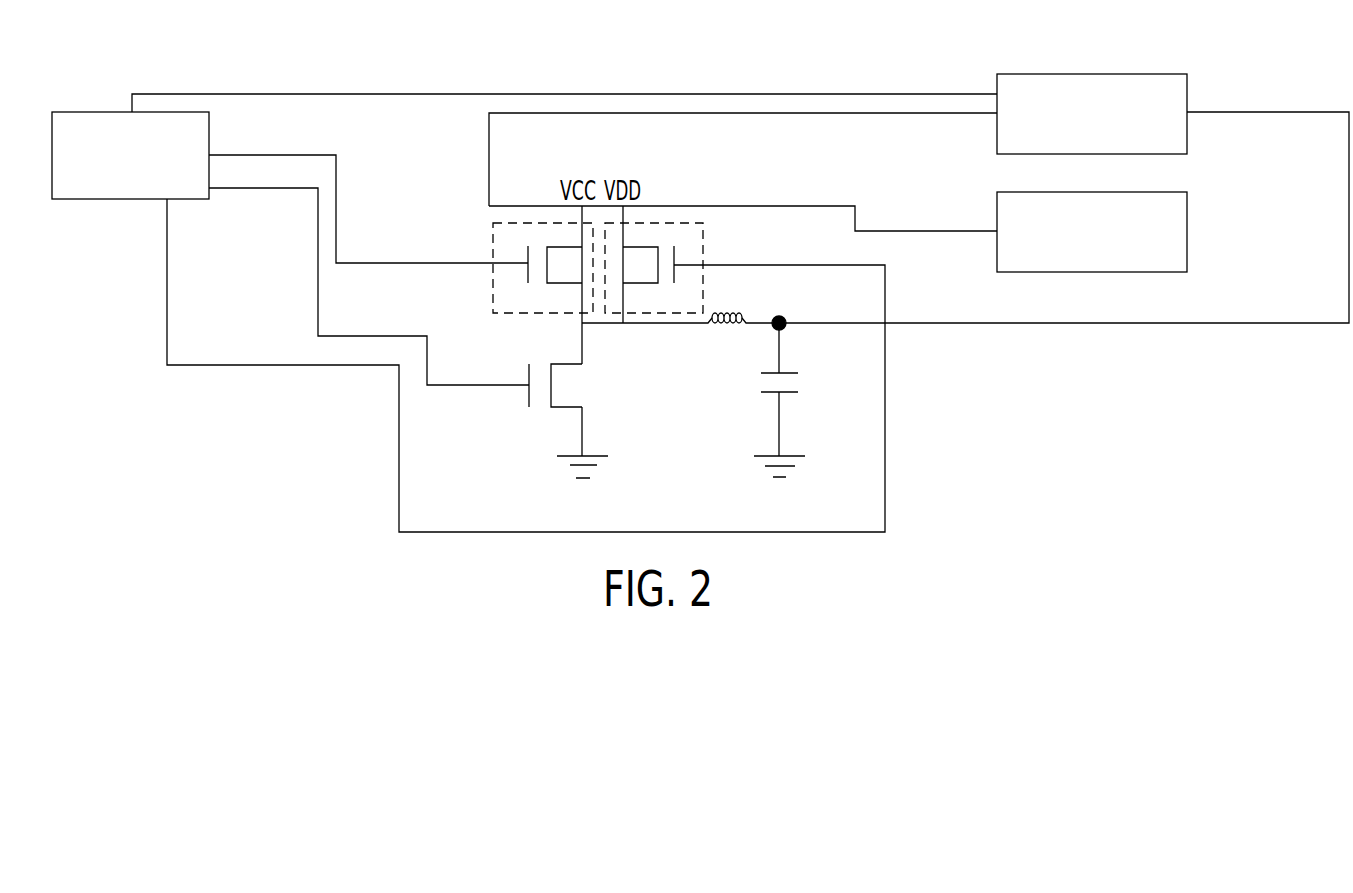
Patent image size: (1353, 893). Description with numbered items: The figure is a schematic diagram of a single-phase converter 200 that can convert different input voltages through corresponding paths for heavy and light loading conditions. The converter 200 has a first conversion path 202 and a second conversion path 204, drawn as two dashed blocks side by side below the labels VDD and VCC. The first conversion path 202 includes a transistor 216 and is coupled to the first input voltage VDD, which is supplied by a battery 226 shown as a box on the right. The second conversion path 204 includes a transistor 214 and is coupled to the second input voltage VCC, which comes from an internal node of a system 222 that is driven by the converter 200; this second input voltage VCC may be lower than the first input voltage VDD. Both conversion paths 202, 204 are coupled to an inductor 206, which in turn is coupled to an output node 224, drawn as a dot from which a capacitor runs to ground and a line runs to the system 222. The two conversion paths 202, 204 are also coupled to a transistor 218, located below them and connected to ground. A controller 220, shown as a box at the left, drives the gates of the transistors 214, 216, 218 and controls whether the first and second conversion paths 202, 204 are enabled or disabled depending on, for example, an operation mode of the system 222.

The single-phase converter 200 is at (712, 90).
The first conversion path 202 is at (703, 270).
The second conversion path 204 is at (492, 242).
The inductor 206 is at (677, 339).
The transistor 214 is at (552, 264).
The transistor 216 is at (652, 264).
The transistor 218 is at (571, 400).
The controller 220 is at (86, 112).
The system 222 is at (1107, 74).
The output node 224 is at (781, 380).
The battery 226 is at (997, 250).